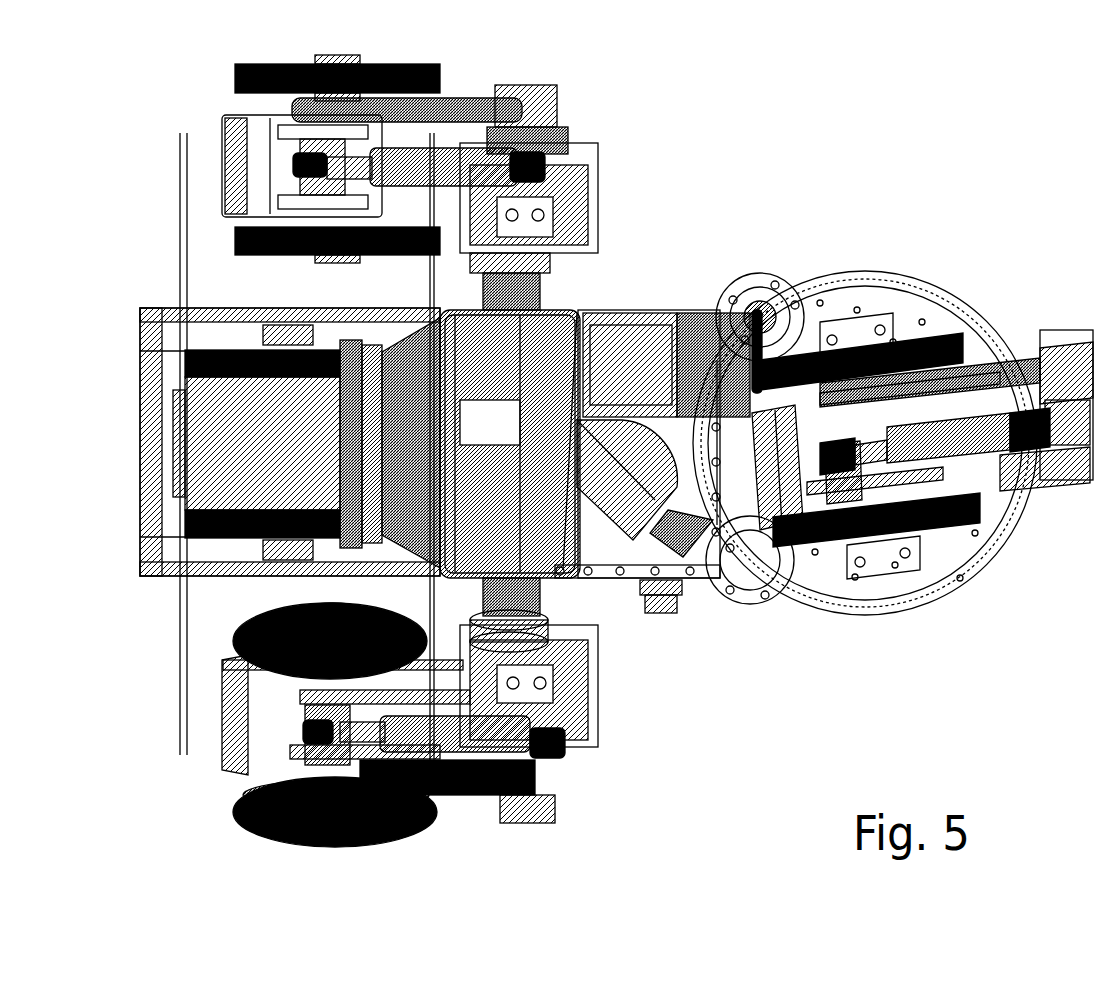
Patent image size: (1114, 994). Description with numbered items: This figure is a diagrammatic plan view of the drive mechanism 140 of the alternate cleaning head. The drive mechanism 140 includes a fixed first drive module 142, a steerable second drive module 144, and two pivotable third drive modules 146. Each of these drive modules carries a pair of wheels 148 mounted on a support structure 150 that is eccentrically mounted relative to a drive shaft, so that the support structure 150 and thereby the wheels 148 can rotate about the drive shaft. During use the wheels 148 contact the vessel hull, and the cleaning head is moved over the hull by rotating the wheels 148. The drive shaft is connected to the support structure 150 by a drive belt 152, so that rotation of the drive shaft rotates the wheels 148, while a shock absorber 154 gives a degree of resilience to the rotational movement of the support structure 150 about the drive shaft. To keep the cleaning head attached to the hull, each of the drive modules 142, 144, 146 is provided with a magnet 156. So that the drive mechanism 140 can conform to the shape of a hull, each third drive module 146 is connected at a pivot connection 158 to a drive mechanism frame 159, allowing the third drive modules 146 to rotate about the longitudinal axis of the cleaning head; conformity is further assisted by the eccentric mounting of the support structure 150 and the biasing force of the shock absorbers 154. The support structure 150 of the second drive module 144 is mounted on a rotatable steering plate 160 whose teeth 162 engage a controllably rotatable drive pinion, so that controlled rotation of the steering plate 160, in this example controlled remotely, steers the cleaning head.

The drive mechanism 140 is at (815, 150).
The first drive module 142 is at (203, 587).
The second drive module 144 is at (977, 611).
The third drive module 146 is at (453, 53).
The wheels 148 is at (275, 66).
The support structure 150 is at (280, 155).
The drive belt 152 is at (465, 100).
The shock absorber 154 is at (488, 162).
The magnet 156 is at (250, 150).
The pivot connection 158 is at (505, 277).
The drive mechanism frame 159 is at (566, 294).
The steering plate 160 is at (887, 300).
The teeth 162 is at (808, 292).